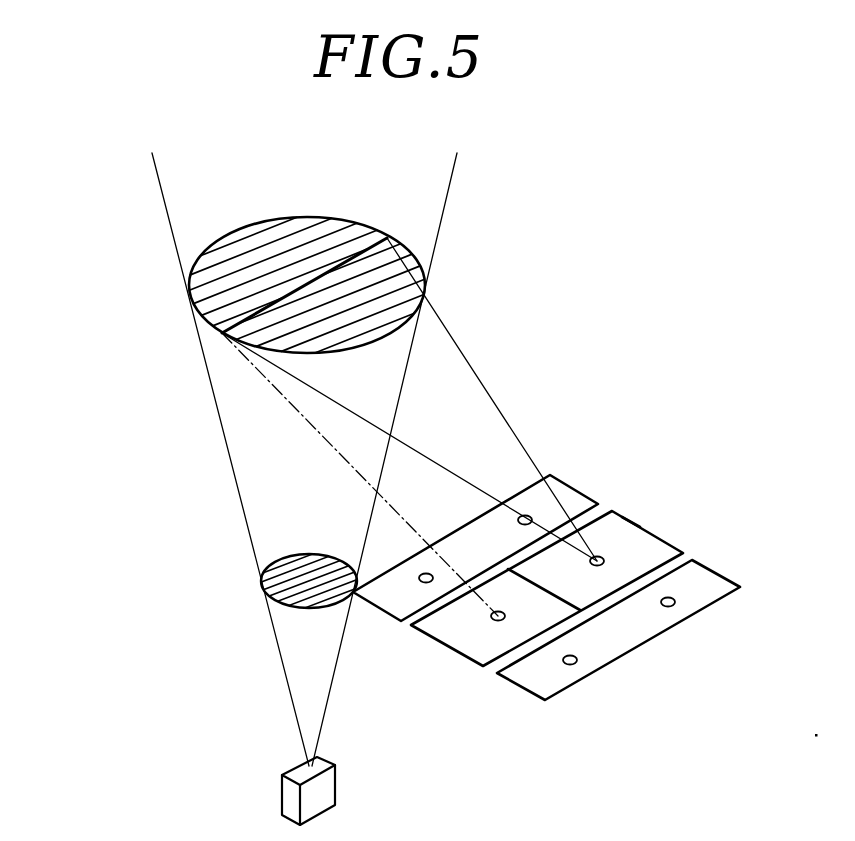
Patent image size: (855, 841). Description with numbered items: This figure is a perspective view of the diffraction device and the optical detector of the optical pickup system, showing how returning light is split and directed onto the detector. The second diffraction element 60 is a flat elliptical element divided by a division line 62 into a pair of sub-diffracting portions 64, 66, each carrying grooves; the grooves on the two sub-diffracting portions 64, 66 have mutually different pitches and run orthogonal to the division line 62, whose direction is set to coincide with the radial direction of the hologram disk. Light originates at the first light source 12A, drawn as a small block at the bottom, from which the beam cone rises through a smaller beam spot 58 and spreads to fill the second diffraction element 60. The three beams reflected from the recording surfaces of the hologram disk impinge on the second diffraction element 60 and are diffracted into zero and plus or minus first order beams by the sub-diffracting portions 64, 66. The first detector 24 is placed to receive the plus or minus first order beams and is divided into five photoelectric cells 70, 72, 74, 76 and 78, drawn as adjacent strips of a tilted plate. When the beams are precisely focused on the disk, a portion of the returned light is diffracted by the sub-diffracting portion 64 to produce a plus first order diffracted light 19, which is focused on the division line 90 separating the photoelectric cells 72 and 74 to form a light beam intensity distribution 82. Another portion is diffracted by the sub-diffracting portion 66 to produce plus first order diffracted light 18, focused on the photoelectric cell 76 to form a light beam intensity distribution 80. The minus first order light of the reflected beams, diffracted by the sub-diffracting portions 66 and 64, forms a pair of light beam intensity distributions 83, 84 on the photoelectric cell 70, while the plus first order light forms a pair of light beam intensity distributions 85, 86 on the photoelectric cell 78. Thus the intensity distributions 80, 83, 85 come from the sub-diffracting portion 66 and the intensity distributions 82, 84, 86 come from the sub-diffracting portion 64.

The first light source 12A is at (276, 791).
The +1 order diffracted light 18 is at (428, 376).
The +1 order diffracted light 19 is at (482, 373).
The first detector 24 is at (572, 569).
The beam spot 58 is at (262, 580).
The second diffraction element 60 is at (225, 266).
The division line 62 is at (385, 238).
The sub-diffracting portion 64 is at (258, 235).
The sub-diffracting portion 66 is at (235, 345).
The photoelectric cell 70 is at (492, 591).
The photoelectric cell 72 is at (554, 562).
The photoelectric cell 74 is at (655, 562).
The photoelectric cell 76 is at (451, 626).
The photoelectric cell 78 is at (632, 671).
The light beam intensity distribution 80 is at (497, 622).
The light beam intensity distribution 82 is at (598, 555).
The light beam intensity distribution 83 is at (421, 582).
The light beam intensity distribution 84 is at (528, 512).
The light beam intensity distribution 85 is at (580, 663).
The light beam intensity distribution 86 is at (675, 608).
The division line 90 is at (630, 535).